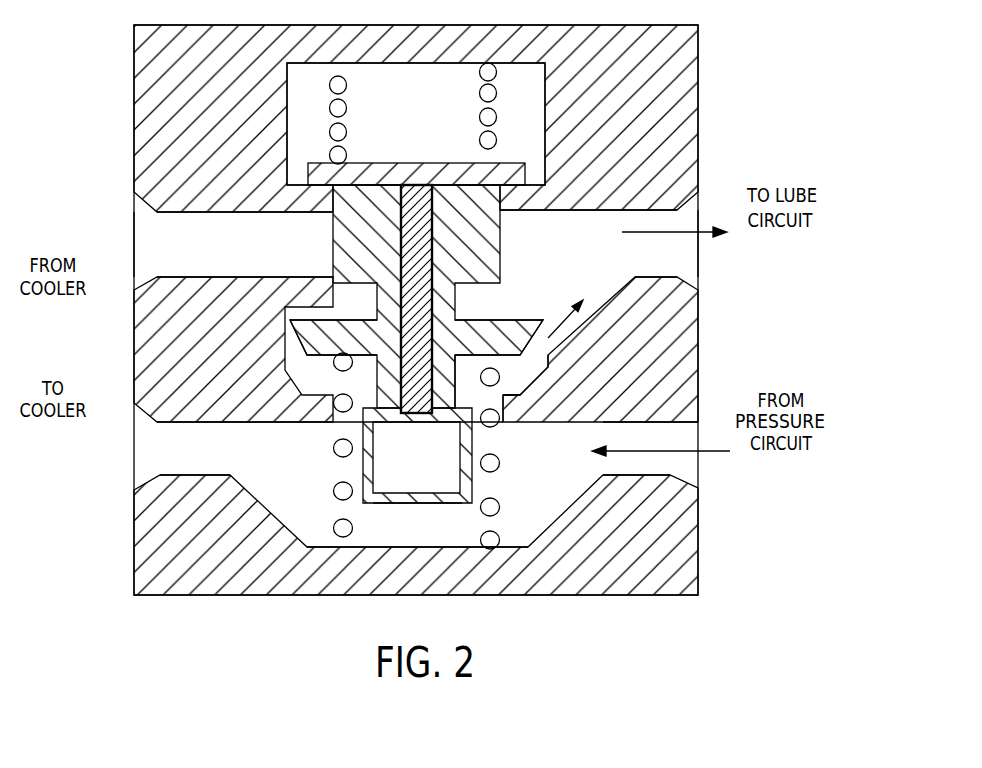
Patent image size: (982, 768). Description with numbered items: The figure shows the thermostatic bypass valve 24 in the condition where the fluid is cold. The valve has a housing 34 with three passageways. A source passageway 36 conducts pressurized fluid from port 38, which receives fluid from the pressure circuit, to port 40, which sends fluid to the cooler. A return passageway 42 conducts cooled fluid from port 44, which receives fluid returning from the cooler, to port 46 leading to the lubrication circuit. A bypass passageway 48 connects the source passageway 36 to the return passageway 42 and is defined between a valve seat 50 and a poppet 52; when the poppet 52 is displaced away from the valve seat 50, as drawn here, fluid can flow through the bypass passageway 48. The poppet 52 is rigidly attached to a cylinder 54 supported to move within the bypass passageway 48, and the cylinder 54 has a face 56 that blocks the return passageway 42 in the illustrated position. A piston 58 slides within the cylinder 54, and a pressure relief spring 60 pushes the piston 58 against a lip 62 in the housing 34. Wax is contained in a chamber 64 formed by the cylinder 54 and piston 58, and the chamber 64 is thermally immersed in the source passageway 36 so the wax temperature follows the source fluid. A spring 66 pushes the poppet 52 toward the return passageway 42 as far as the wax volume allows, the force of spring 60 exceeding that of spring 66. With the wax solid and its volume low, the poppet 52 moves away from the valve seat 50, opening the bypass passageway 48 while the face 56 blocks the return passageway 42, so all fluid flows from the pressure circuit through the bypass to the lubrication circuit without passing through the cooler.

The bypass valve 24 is at (740, 114).
The housing 34 is at (191, 125).
The source passageway 36 is at (513, 497).
The port 38 is at (700, 470).
The port 40 is at (143, 452).
The return passageway 42 is at (190, 255).
The port 44 is at (143, 240).
The port 46 is at (692, 257).
The bypass passageway 48 is at (508, 389).
The valve seat 50 is at (516, 397).
The poppet 52 is at (520, 320).
The cylinder 54 is at (408, 503).
The face 56 is at (333, 248).
The piston 58 is at (407, 183).
The pressure relief spring 60 is at (497, 117).
The lip 62 is at (533, 183).
The chamber 64 is at (408, 472).
The spring 66 is at (334, 492).